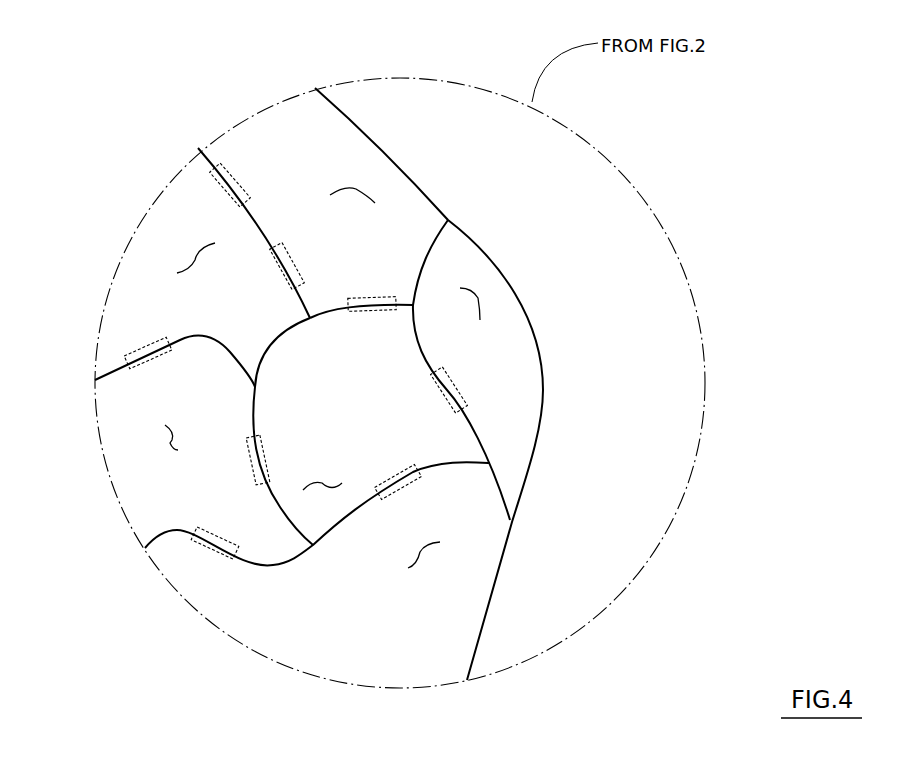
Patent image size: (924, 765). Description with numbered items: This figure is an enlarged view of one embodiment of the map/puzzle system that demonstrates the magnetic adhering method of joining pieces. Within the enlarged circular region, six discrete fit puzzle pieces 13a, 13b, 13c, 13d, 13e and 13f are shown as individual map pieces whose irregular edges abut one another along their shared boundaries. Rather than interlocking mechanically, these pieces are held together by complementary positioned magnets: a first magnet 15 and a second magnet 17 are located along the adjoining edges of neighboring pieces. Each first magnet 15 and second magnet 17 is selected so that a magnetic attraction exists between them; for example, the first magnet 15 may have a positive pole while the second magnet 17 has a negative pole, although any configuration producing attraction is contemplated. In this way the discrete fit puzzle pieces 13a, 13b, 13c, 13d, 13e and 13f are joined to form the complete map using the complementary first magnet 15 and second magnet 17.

The discrete fit puzzle piece 13a is at (478, 298).
The discrete fit puzzle piece 13b is at (353, 187).
The discrete fit puzzle piece 13c is at (420, 558).
The discrete fit puzzle piece 13d is at (323, 487).
The discrete fit puzzle piece 13e is at (170, 443).
The discrete fit puzzle piece 13f is at (197, 247).
The first magnet 15 is at (243, 178).
The second magnet 17 is at (218, 183).